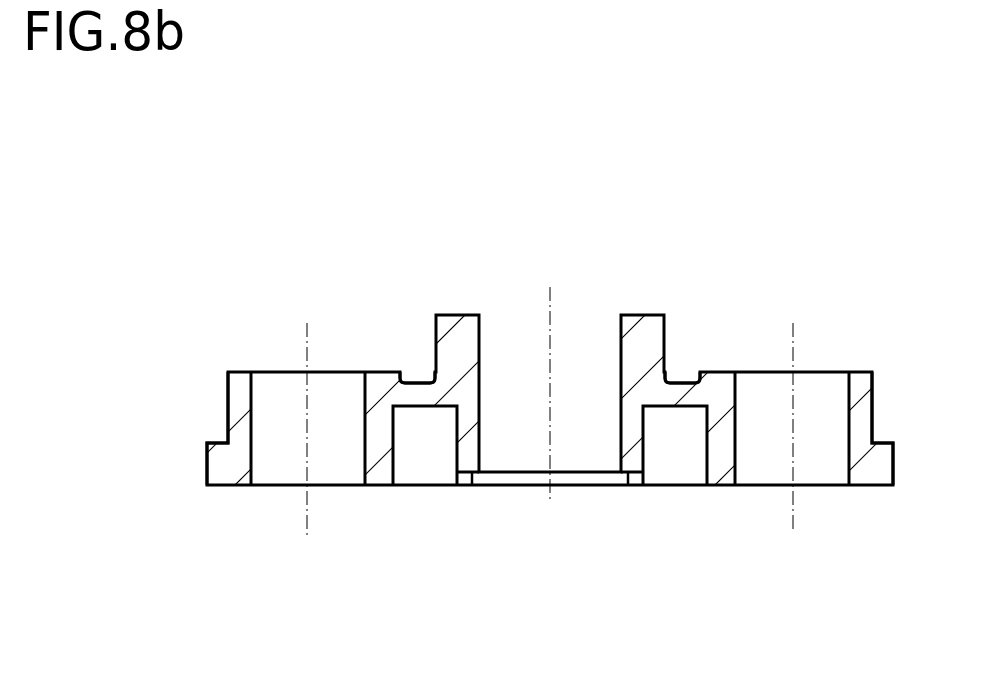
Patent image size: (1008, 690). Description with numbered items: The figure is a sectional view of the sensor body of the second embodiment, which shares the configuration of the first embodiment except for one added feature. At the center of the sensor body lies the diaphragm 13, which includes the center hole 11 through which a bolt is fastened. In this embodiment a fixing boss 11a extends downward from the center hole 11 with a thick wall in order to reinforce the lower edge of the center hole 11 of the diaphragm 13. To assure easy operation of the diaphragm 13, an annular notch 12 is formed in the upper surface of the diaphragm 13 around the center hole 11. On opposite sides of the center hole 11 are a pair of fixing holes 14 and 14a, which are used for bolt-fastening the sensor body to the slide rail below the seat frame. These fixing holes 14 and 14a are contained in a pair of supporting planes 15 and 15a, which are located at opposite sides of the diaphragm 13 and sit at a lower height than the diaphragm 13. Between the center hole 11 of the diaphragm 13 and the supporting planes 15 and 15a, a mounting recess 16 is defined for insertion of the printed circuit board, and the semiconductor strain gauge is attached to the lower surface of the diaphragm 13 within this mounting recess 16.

The center hole 11 is at (584, 332).
The fixing boss 11a is at (466, 464).
The annular notch 12 is at (683, 375).
The diaphragm 13 is at (663, 408).
The fixing hole 14 is at (277, 390).
The fixing hole 14a is at (822, 383).
The supporting plane 15 is at (237, 487).
The supporting plane 15a is at (876, 487).
The mounting recess 16 is at (417, 468).